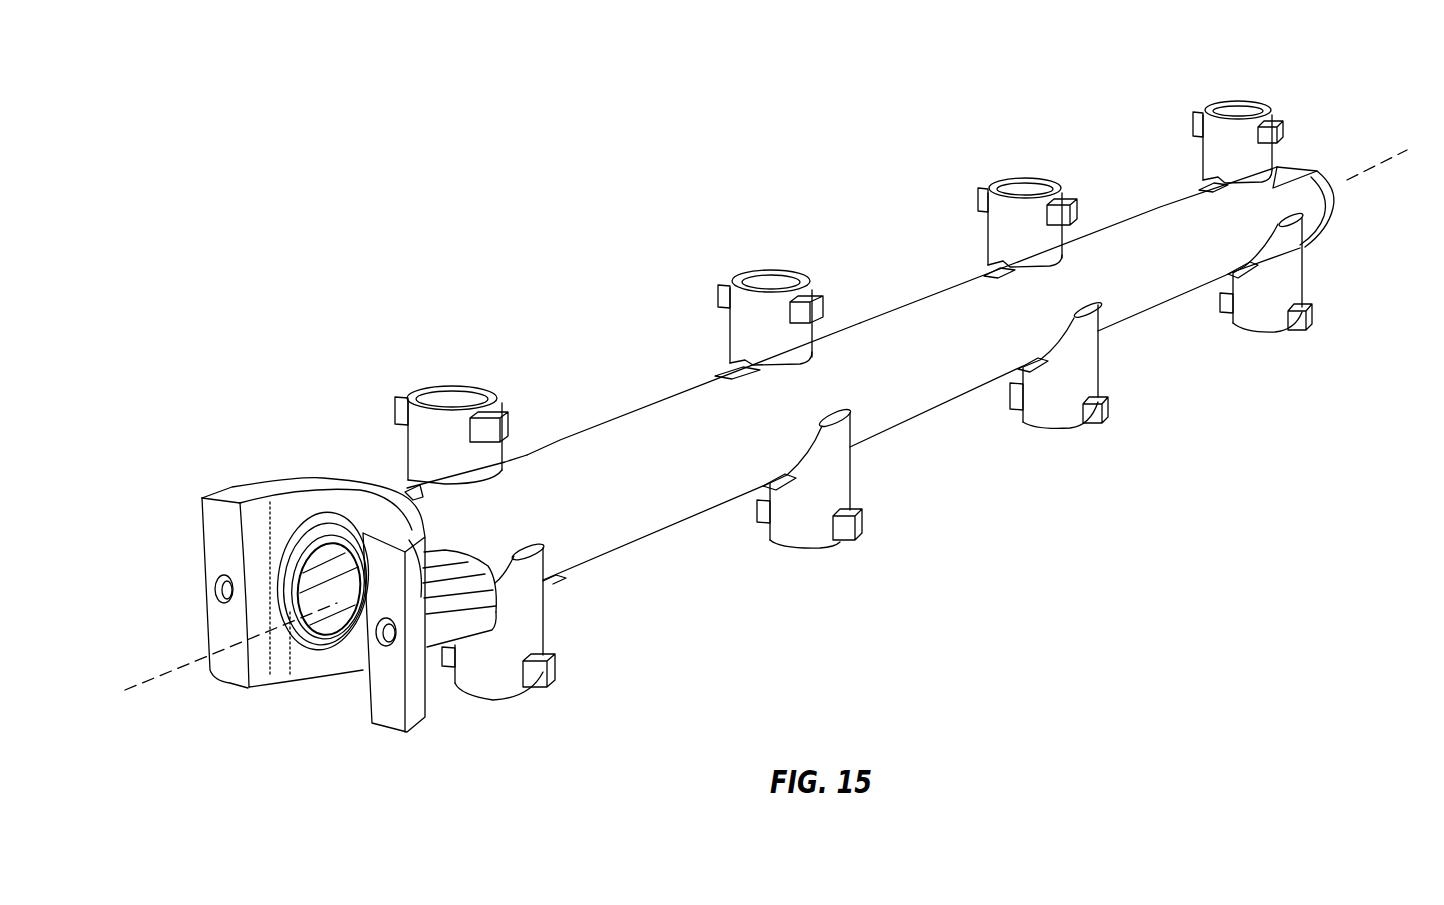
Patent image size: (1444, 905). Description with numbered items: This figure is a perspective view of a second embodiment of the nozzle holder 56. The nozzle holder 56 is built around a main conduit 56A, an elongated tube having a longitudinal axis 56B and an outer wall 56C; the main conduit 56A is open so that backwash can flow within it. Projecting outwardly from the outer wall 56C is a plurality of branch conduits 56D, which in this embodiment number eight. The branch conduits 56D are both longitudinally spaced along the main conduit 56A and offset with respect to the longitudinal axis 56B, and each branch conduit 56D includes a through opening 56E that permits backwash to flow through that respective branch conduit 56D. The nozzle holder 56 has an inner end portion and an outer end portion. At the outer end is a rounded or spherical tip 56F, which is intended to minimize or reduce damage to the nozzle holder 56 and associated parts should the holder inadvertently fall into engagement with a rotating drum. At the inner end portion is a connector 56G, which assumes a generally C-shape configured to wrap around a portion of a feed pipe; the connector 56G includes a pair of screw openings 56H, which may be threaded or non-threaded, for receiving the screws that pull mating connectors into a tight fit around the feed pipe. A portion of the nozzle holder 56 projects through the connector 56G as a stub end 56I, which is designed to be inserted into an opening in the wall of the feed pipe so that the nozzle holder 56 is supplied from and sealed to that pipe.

The nozzle holder 56 is at (938, 442).
The main conduit 56A is at (910, 345).
The longitudinal axis 56B is at (180, 670).
The outer wall 56C is at (645, 407).
The branch conduits 56D is at (755, 323).
The through opening 56E is at (1025, 188).
The rounded or spherical tip 56F is at (1337, 195).
The connector 56G is at (392, 697).
The screw openings 56H is at (212, 598).
The stub end 56I is at (343, 555).